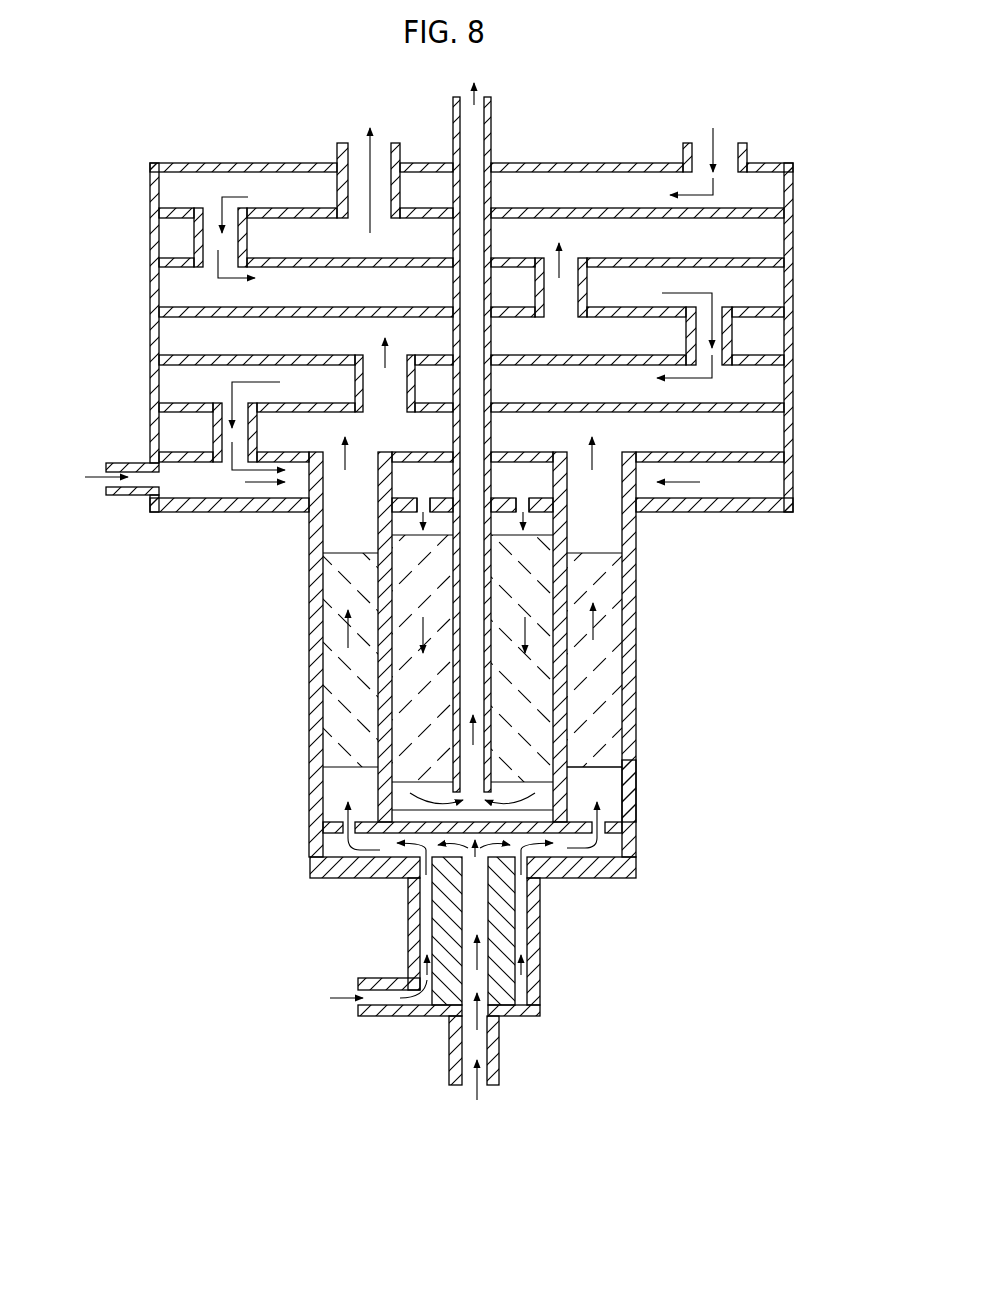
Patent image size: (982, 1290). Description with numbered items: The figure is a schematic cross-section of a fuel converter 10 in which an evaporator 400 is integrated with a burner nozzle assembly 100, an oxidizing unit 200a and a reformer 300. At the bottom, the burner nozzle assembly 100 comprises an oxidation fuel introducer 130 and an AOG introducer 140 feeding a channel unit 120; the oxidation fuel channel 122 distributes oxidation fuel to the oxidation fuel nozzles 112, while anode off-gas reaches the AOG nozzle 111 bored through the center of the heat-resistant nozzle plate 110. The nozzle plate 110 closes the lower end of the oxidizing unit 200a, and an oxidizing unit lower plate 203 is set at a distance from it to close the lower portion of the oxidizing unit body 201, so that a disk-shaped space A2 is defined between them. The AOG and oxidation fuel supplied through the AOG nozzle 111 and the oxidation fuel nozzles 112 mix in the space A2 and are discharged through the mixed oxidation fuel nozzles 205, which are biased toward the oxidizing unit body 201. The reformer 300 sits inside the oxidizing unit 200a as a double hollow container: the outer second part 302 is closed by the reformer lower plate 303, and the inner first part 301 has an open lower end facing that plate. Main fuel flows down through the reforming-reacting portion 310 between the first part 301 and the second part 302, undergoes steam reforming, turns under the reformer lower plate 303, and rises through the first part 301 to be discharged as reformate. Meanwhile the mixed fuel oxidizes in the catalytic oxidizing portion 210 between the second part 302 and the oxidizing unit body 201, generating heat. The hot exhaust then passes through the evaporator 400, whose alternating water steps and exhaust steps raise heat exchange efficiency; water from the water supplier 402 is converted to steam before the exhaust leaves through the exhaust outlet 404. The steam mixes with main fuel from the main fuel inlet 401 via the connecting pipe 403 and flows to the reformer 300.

The fuel processing apparatus 10 is at (158, 82).
The burner nozzle assembly 100 is at (637, 937).
The nozzle plate 110 is at (623, 880).
The AOG nozzle 111 is at (487, 870).
The oxidation fuel nozzles 112 is at (518, 860).
The channel unit 120 is at (540, 947).
The oxidation fuel channel 122 is at (421, 934).
The oxidation fuel introducer 130 is at (370, 1017).
The AOG introducer 140 is at (492, 1050).
The oxidizing unit 200a is at (725, 743).
The oxidizing unit body 201 is at (635, 782).
The oxidizing unit lower plate 203 is at (610, 822).
The mixed oxidation fuel nozzles 205 is at (603, 838).
The oxidizing portion 210 is at (607, 747).
The reformer 300 is at (705, 573).
The first part 301 is at (492, 577).
The second part 302 is at (567, 660).
The reformer lower plate 303 is at (540, 810).
The reforming-reacting portion 310 is at (538, 625).
The evaporator 400 is at (793, 385).
The main fuel inlet 401 is at (133, 462).
The water supplier 402 is at (722, 158).
The connecting pipe 403 is at (228, 435).
The exhaust outlet 404 is at (362, 158).
The space A2 is at (390, 848).